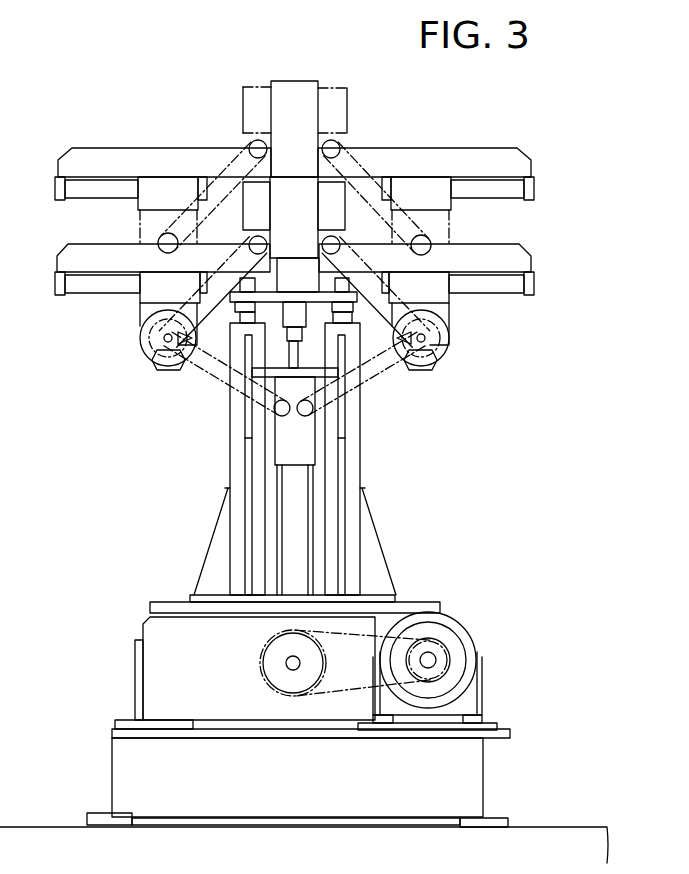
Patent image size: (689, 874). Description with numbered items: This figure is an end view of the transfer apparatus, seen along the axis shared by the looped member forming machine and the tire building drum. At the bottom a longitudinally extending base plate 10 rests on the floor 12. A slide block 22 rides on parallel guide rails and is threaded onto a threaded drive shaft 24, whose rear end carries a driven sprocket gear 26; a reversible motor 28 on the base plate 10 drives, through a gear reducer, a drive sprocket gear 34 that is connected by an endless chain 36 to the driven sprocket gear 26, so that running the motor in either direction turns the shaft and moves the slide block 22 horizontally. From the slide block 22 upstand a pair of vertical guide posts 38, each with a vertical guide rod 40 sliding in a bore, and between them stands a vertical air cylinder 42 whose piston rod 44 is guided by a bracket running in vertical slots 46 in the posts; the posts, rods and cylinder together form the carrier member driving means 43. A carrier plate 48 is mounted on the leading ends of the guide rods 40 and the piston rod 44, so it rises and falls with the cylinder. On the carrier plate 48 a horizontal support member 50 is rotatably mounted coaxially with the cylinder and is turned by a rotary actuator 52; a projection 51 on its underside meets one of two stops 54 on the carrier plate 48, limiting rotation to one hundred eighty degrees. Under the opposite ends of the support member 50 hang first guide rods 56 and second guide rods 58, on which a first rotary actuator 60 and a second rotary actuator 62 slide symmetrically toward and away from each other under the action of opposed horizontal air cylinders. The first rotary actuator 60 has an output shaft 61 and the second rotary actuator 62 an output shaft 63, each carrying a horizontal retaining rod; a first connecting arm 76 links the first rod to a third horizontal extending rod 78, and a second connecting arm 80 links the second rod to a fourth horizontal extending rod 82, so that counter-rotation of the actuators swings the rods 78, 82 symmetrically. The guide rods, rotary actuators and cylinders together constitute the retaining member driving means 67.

The base plate 10 is at (474, 770).
The floor 12 is at (561, 832).
The slide block 22 is at (406, 607).
The threaded drive shaft 24 is at (290, 665).
The driven sprocket gear 26 is at (279, 681).
The reversible motor 28 is at (472, 637).
The drive sprocket gear 34 is at (438, 650).
The endless chain 36 is at (327, 697).
The vertical guide posts 38 is at (358, 438).
The vertical guide rods 40 is at (240, 316).
The vertical air cylinder 42 is at (308, 532).
The carrier member driving means 43 is at (228, 466).
The piston rod 44 is at (294, 365).
The vertical slots 46 is at (341, 468).
The carrier plate 48 is at (275, 265).
The horizontal support member 50 is at (522, 258).
The projection 51 is at (274, 296).
The rotary actuator 52 is at (293, 183).
The stops 54 is at (242, 260).
The first guide rods 56 is at (507, 290).
The second guide rods 58 is at (117, 288).
The first rotary actuator 60 is at (449, 347).
The output shaft of the first rotary actuator 61 is at (438, 362).
The second rotary actuator 62 is at (143, 357).
The output shaft of the second rotary actuator 63 is at (150, 342).
The retaining member driving means 67 is at (110, 368).
The first connecting arm 76 is at (388, 288).
The third horizontal extending rod 78 is at (332, 243).
The second connecting arm 80 is at (204, 283).
The fourth horizontal extending rod 82 is at (258, 243).